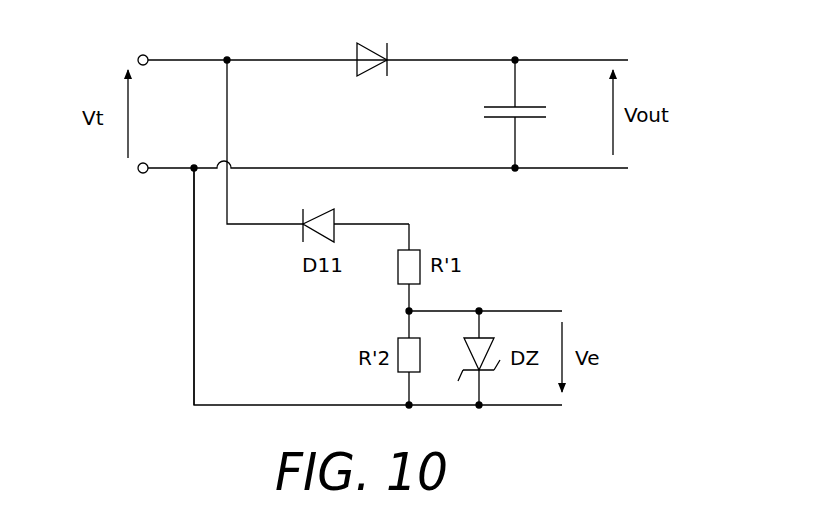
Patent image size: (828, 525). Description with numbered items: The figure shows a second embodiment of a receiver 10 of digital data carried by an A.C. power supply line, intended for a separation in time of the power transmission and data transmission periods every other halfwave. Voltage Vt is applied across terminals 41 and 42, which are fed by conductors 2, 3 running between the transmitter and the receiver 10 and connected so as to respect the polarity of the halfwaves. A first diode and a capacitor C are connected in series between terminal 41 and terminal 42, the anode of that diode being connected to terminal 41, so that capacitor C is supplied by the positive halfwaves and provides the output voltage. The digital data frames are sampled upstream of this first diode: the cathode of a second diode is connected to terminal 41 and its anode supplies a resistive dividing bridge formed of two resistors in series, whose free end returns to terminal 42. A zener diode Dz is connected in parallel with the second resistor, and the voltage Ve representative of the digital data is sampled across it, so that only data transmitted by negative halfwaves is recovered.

The terminal 41 is at (146, 57).
The terminal 42 is at (146, 165).
The conductor 2 is at (210, 57).
The conductor 3 is at (170, 170).
The receiver 10 is at (540, 51).